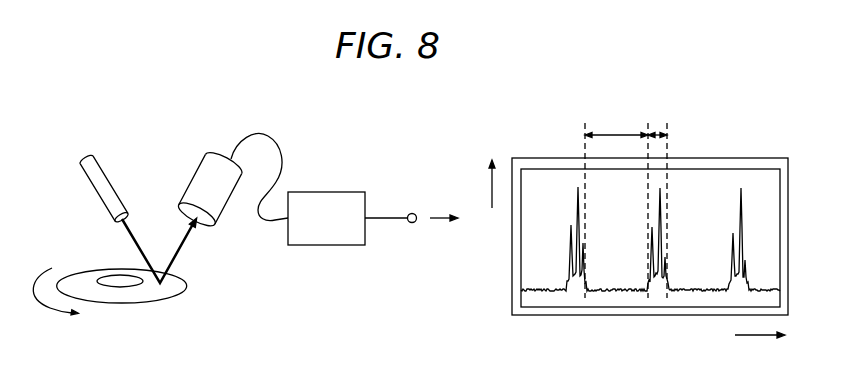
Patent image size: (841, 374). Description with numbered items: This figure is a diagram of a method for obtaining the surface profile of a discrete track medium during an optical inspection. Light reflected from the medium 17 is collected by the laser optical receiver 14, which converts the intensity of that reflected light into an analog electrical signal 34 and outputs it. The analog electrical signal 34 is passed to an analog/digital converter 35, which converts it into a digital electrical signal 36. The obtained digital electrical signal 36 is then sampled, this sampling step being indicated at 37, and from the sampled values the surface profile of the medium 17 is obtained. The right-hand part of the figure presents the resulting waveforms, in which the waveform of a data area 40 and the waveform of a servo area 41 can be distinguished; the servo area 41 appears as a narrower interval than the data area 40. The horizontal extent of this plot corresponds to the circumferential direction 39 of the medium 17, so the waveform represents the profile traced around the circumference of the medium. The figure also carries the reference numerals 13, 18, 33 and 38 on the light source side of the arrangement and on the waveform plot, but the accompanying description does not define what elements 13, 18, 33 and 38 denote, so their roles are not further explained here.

The laser light source 13 is at (83, 160).
The laser optical receiver 14 is at (205, 173).
The medium 17 is at (126, 294).
The laser beam 18 is at (153, 250).
The rotation direction 33 is at (55, 300).
The analog electrical signal 34 is at (265, 172).
The analog/digital converter 35 is at (318, 192).
The digital electrical signal 36 is at (411, 207).
The sampling 37 is at (412, 223).
The signal intensity axis 38 is at (493, 197).
The circumferential direction 39 is at (747, 335).
The data area 40 is at (616, 204).
The servo area 41 is at (660, 204).